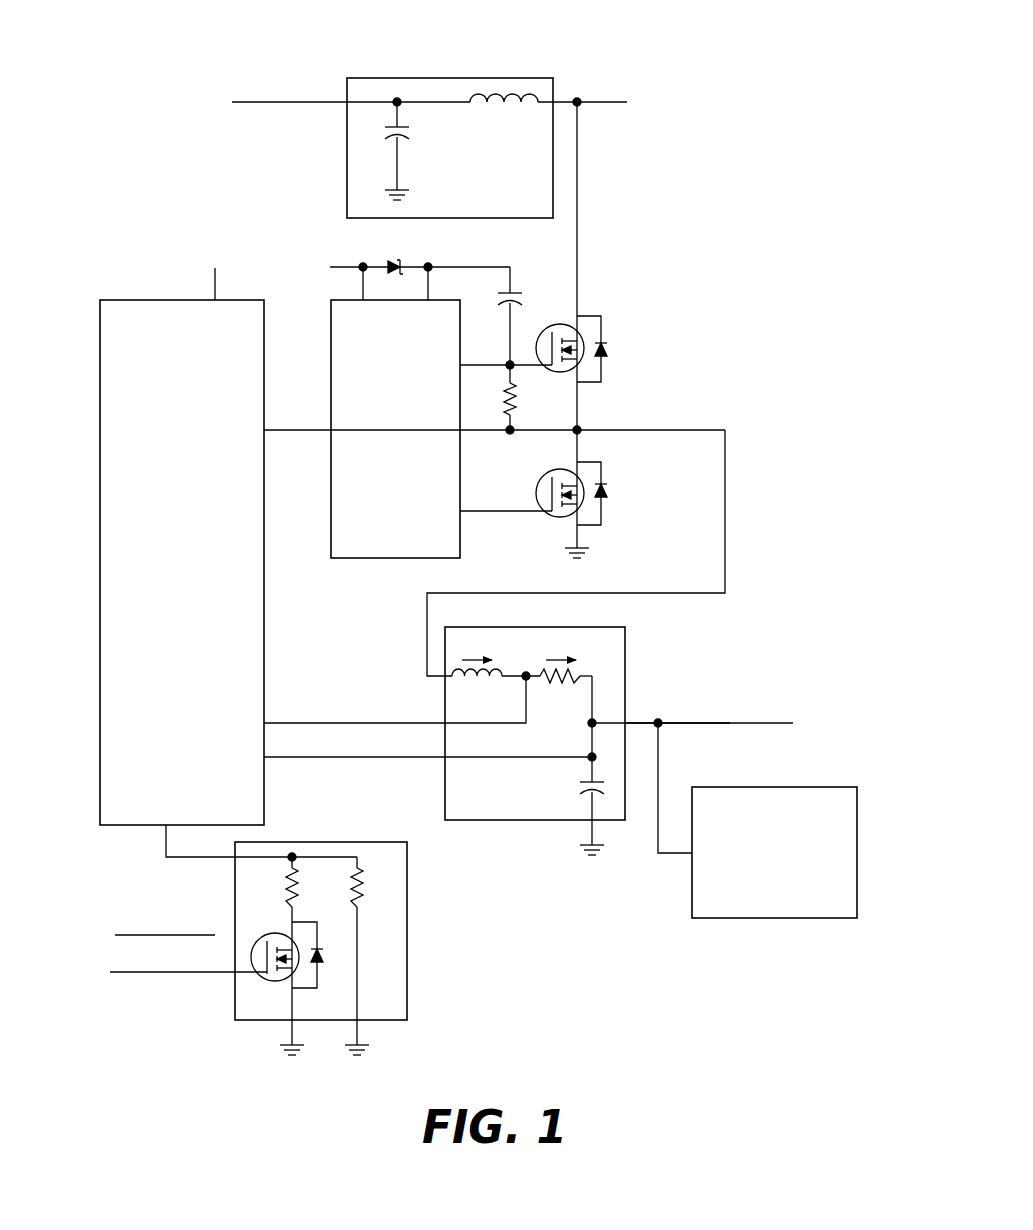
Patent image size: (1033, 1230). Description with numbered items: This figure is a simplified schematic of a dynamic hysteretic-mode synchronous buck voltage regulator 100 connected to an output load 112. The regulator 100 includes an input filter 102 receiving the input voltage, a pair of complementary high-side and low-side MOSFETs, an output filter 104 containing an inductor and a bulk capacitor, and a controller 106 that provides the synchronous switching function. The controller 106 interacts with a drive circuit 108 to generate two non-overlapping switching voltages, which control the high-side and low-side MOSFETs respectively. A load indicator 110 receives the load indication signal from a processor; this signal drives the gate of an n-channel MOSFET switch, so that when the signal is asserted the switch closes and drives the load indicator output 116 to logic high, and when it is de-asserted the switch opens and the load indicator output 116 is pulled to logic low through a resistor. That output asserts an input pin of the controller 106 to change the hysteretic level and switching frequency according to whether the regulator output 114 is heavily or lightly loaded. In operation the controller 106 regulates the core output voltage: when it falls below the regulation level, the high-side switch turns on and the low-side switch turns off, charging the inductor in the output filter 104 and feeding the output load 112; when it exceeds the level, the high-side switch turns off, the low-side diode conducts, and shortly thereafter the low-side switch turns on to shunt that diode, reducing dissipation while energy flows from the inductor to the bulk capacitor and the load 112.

The dynamic hysteretic-mode synchronous buck voltage regulator 100 is at (534, 467).
The input filter 102 is at (450, 78).
The output filter 104 is at (625, 690).
The controller 106 is at (178, 300).
The drive circuit 108 is at (392, 560).
The load indicator 110 is at (407, 952).
The output load 112 is at (775, 918).
The regulator output 114 is at (728, 722).
The load indicator output 116 is at (166, 845).